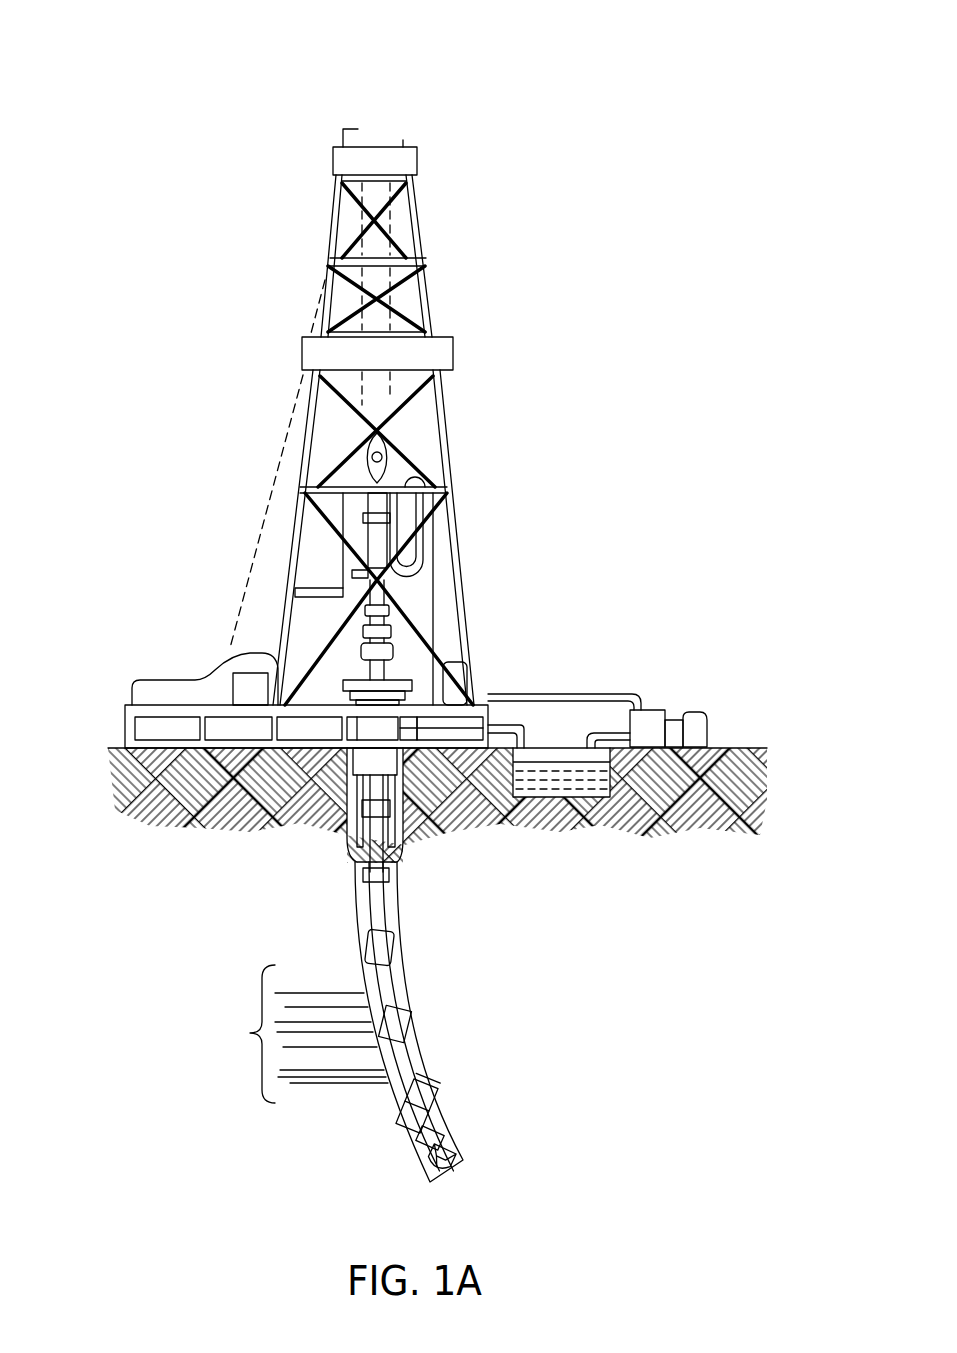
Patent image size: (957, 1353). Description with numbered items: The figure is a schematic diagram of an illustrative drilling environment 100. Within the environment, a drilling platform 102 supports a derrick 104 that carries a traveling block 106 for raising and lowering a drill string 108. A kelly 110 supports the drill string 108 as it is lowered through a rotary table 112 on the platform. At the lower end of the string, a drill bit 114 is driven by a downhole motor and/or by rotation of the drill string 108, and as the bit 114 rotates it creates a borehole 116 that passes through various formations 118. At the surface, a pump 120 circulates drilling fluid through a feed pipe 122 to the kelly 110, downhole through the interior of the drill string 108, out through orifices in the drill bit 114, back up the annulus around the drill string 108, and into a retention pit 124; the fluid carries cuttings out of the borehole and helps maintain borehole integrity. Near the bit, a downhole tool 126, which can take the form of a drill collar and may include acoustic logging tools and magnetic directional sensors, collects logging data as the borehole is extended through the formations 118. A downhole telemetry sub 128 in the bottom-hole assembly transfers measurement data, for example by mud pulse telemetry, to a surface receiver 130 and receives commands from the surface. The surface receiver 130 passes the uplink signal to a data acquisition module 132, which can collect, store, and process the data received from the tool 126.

The drilling environment 100 is at (385, 105).
The drilling platform 102 is at (125, 735).
The derrick 104 is at (430, 297).
The traveling block 106 is at (390, 462).
The drill string 108 is at (387, 913).
The kelly 110 is at (392, 548).
The rotary table 112 is at (395, 673).
The drill bit 114 is at (420, 1170).
The borehole 116 is at (400, 958).
The formations 118 is at (291, 1034).
The pump 120 is at (648, 710).
The feed pipe 122 is at (550, 693).
The retention pit 124 is at (555, 762).
The downhole tool 126 is at (407, 1137).
The downhole telemetry sub 128 is at (410, 1103).
The surface receiver 130 is at (388, 630).
The data acquisition module 132 is at (225, 692).